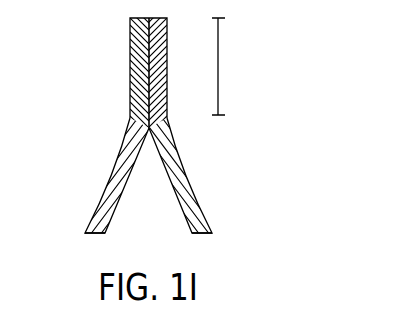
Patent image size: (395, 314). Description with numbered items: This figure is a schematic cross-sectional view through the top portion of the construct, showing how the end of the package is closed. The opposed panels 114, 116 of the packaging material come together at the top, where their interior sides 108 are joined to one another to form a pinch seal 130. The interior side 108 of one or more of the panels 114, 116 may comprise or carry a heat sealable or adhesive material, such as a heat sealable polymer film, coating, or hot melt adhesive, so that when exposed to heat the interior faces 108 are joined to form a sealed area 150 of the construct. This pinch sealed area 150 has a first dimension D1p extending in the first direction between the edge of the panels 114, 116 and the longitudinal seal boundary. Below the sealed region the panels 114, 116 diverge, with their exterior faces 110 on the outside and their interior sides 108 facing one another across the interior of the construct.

The sealed area 150 is at (127, 18).
The pinch seal 130 is at (150, 63).
The first dimension of the sealed area D1p is at (237, 66).
The panel 114 is at (115, 174).
The panel 116 is at (180, 173).
The outer side 110 is at (92, 210).
The interior side 108 is at (188, 218).